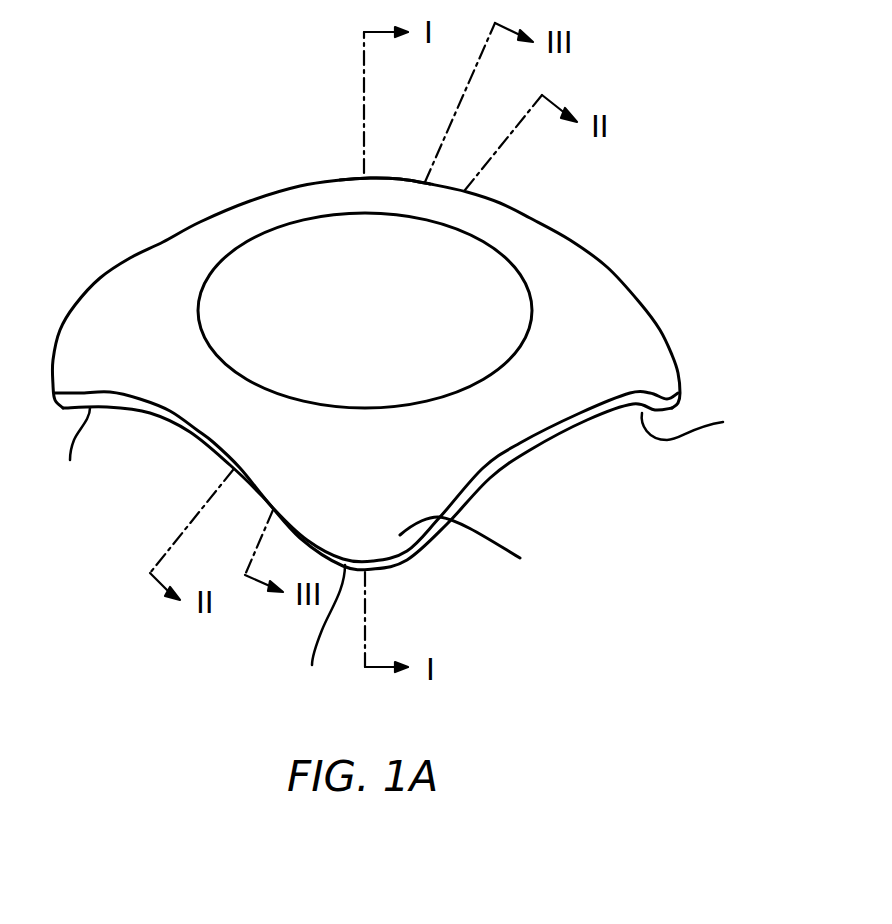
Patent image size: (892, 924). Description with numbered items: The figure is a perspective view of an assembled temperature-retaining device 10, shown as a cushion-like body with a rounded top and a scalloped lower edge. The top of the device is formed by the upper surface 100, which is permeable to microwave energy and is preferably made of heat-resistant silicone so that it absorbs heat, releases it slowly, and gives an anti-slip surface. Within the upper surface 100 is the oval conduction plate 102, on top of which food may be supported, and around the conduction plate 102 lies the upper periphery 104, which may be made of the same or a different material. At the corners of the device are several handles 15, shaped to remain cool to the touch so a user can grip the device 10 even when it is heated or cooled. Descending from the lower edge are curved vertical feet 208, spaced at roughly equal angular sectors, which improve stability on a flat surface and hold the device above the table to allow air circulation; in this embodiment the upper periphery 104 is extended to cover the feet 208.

The temperature-retaining device 10 is at (172, 152).
The handles 15 is at (163, 242).
The upper surface 100 is at (383, 195).
The conduction plate 102 is at (482, 275).
The upper periphery 104 is at (485, 544).
The feet 208 is at (411, 551).